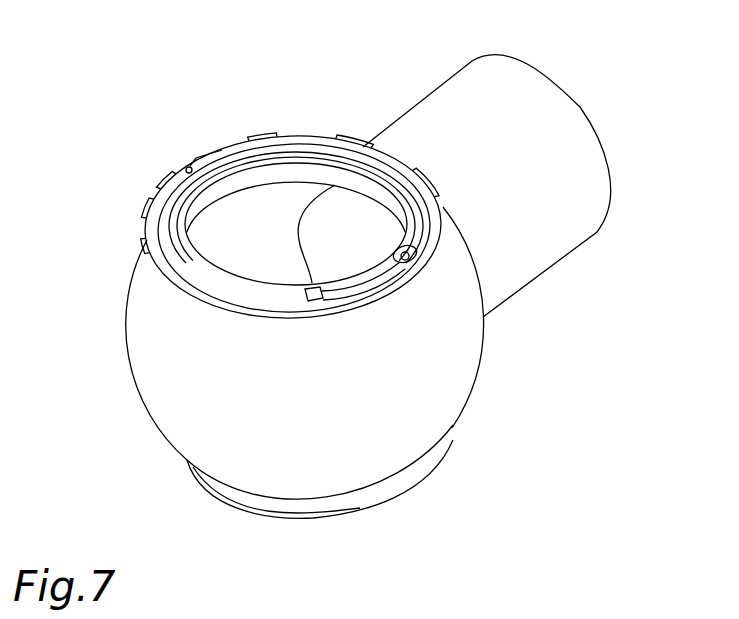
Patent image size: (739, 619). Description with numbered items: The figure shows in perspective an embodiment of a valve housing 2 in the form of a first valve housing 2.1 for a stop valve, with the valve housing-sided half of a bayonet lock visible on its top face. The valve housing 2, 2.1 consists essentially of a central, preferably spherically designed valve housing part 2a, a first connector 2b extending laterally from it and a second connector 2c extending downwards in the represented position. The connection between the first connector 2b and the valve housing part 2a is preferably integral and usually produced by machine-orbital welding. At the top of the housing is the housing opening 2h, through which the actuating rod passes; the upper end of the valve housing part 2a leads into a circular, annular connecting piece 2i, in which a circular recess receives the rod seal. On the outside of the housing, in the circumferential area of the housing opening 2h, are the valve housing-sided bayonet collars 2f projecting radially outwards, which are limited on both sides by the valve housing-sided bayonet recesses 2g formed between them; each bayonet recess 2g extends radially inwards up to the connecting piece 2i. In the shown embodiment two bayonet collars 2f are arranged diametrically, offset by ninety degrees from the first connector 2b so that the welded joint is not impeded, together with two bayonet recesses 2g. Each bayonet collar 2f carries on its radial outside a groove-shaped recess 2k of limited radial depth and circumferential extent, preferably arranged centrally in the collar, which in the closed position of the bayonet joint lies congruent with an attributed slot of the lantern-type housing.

The valve housing 2 is at (143, 414).
The first valve housing 2.1 is at (143, 414).
The valve housing part 2a is at (388, 428).
The first connector 2b is at (538, 213).
The second connector 2c is at (316, 518).
The valve housing-sided bayonet collar 2f is at (218, 155).
The valve housing-sided bayonet recess 2g is at (303, 135).
The housing opening 2h is at (282, 178).
The connecting piece 2i is at (248, 302).
The groove-shaped recess 2k is at (180, 175).